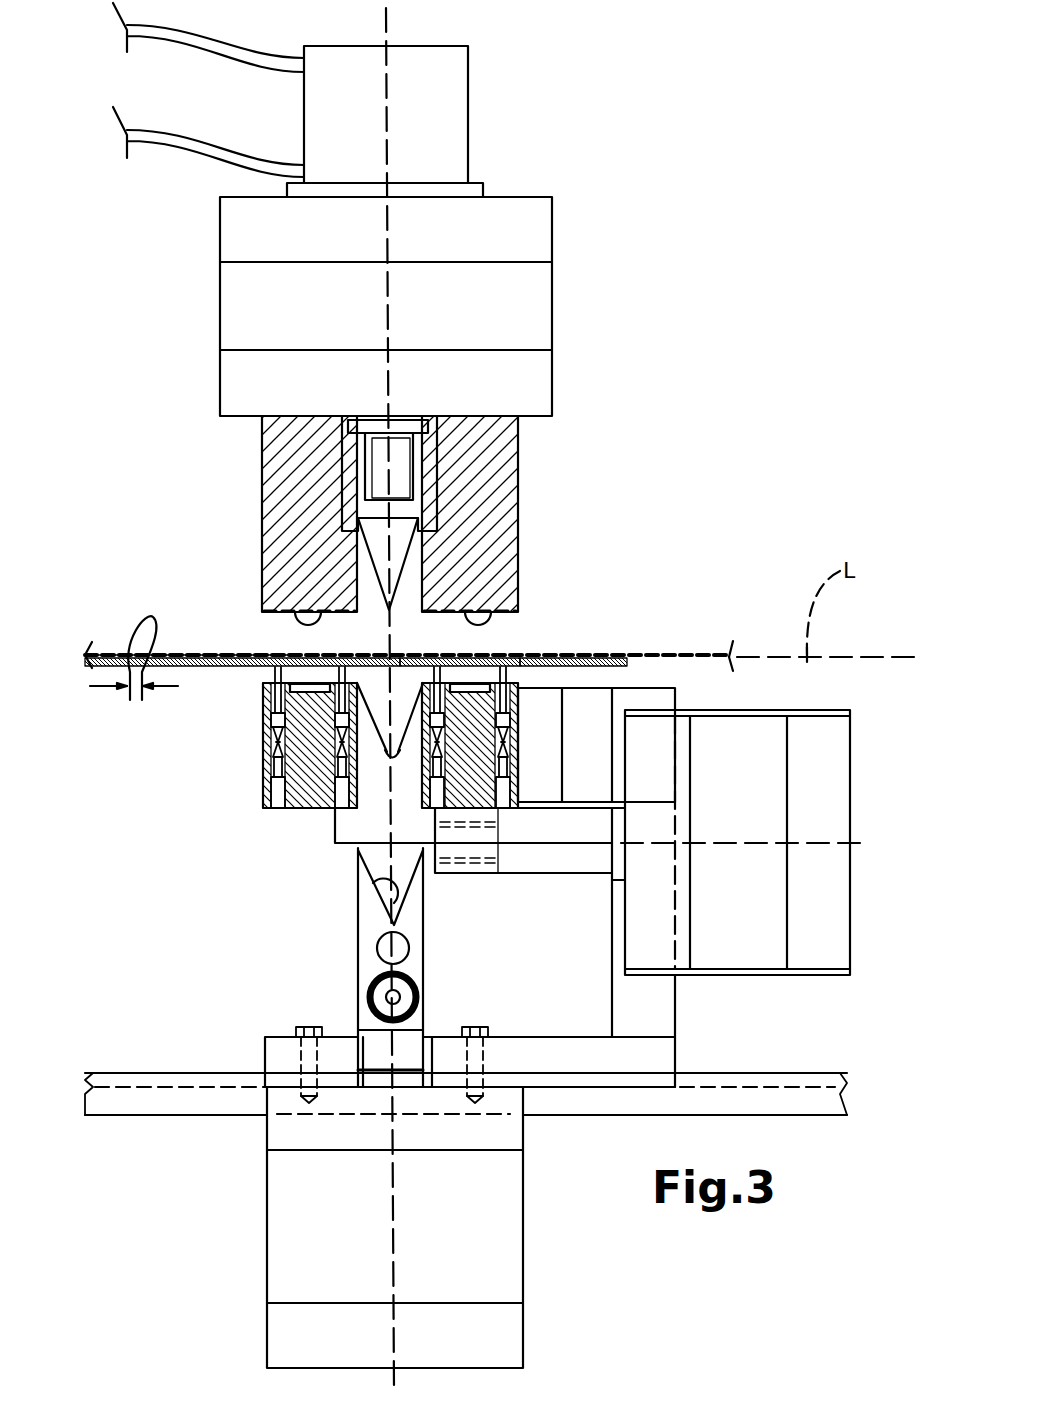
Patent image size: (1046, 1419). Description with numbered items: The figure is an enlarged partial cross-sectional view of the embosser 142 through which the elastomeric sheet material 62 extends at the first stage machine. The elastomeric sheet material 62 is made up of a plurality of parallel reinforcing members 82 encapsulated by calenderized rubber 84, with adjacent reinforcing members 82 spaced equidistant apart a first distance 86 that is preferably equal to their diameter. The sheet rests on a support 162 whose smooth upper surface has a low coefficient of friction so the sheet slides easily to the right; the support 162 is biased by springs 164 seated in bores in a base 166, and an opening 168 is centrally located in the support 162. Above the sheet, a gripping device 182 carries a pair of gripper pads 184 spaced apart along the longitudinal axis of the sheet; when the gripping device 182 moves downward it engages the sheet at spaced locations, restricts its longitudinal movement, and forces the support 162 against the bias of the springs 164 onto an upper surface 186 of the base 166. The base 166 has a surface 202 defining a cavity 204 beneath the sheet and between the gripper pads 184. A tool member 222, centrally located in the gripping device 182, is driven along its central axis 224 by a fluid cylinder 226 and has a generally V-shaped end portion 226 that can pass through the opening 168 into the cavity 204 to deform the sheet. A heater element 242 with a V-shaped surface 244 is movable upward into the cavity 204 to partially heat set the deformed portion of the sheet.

The elastomeric sheet material 62 is at (106, 645).
The reinforcing members 82 is at (143, 645).
The calenderized rubber 84 is at (218, 655).
The first distance 86 is at (135, 698).
The embosser 142 is at (592, 190).
The support 162 is at (238, 668).
The springs 164 is at (343, 757).
The base 166 is at (312, 806).
The opening 168 is at (403, 657).
The gripping device 182 is at (530, 569).
The gripper pads 184 is at (296, 612).
The upper surface of the base 186 is at (525, 660).
The surface 202 is at (403, 692).
The cavity 204 is at (393, 700).
The tool member 222 is at (352, 515).
The central axis 224 is at (388, 322).
The fluid cylinder 226 is at (446, 118).
The heater element 242 is at (413, 912).
The V-shaped surface 244 is at (384, 912).